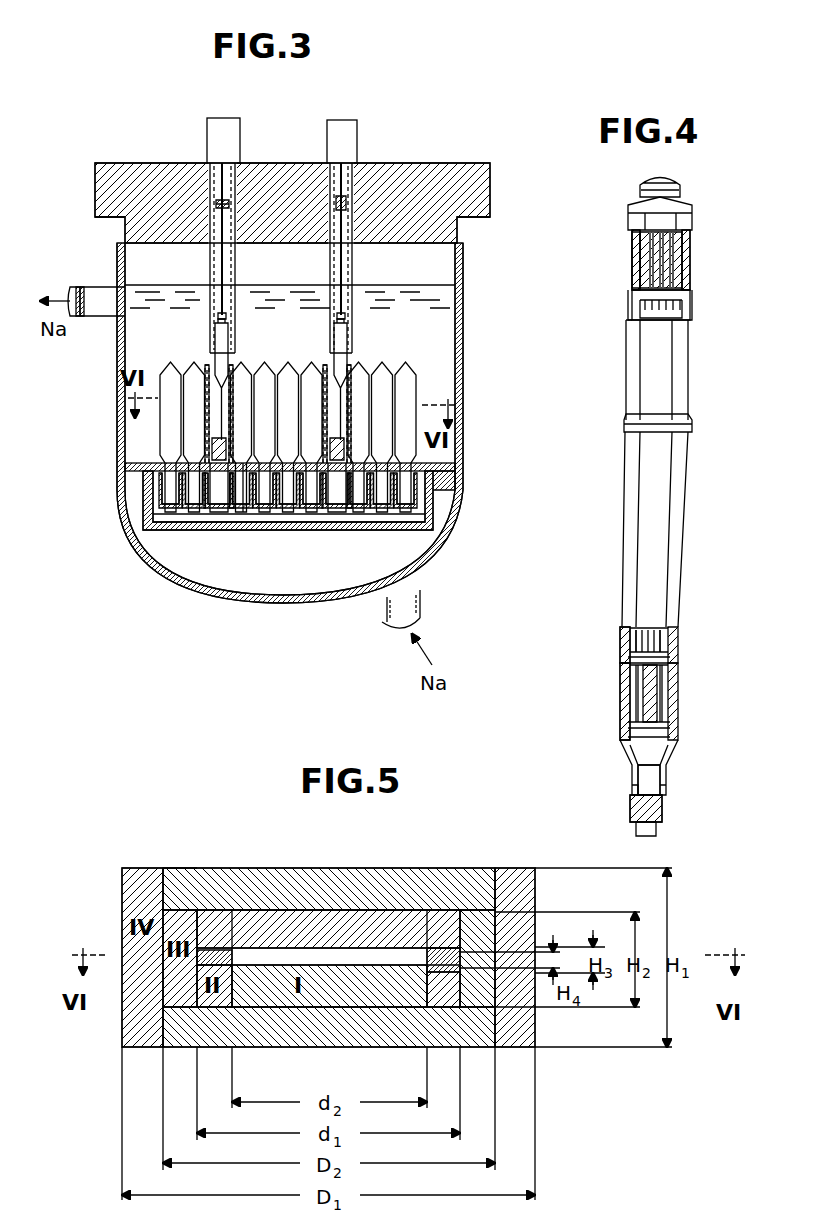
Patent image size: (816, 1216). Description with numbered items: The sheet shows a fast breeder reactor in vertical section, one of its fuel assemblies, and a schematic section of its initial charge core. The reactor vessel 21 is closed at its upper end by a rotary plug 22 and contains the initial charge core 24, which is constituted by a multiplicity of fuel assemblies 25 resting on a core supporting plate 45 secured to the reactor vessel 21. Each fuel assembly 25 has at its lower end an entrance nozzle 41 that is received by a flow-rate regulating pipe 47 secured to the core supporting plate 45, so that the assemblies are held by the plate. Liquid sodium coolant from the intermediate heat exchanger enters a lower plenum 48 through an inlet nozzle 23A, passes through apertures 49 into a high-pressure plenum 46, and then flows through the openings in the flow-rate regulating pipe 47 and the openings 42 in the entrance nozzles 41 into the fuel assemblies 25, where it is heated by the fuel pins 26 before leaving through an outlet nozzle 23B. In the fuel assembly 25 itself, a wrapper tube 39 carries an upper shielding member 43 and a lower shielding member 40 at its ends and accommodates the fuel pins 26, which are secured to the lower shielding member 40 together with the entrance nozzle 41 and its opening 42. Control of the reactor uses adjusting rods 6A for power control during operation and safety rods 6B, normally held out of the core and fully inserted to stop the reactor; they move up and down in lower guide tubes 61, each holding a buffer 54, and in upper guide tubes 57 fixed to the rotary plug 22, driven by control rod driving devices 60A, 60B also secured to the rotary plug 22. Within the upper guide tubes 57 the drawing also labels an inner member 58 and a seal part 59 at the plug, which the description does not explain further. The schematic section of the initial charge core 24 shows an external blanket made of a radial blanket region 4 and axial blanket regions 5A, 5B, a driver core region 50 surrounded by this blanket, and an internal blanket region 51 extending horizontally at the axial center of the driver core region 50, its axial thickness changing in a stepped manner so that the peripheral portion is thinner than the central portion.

In FIG. 3, the reactor vessel 21 is at (463, 330).
In FIG. 3, the rotary plug 22 is at (455, 170).
In FIG. 3, the inlet nozzle 23A is at (422, 600).
In FIG. 3, the outlet nozzle 23B is at (98, 318).
In FIG. 3, the initial charge core 24 is at (161, 340).
In FIG. 5, the initial charge core 24 is at (303, 956).
In FIG. 3, the fuel assembly 25 is at (412, 372).
In FIG. 4, the fuel assembly 25 is at (686, 503).
In FIG. 4, the fuel pins 26 is at (670, 642).
In FIG. 4, the wrapper tube 39 is at (622, 655).
In FIG. 4, the lower shielding member 40 is at (626, 713).
In FIG. 3, the entrance nozzle 41 is at (244, 514).
In FIG. 4, the entrance nozzle 41 is at (666, 772).
In FIG. 4, the opening 42 is at (663, 798).
In FIG. 4, the upper shielding member 43 is at (630, 259).
In FIG. 3, the core supporting plate 45 is at (150, 467).
In FIG. 3, the high-pressure plenum 46 is at (167, 516).
In FIG. 3, the flow-rate regulating pipe 47 is at (155, 512).
In FIG. 3, the lower plenum 48 is at (309, 575).
In FIG. 3, the apertures 49 is at (445, 488).
In FIG. 5, the driver core region 50 is at (178, 978).
In FIG. 5, the internal blanket region 51 is at (378, 966).
In FIG. 3, the buffer 54 is at (212, 447).
In FIG. 3, the upper guide tubes 57 is at (233, 263).
In FIG. 3, the inner rod 58 is at (220, 270).
In FIG. 3, the seal 59 is at (216, 210).
In FIG. 3, the control rod driving device 60A is at (345, 126).
In FIG. 3, the control rod driving device 60B is at (226, 126).
In FIG. 3, the lower guide tubes 61 is at (238, 380).
In FIG. 3, the adjusting rods 6A is at (342, 385).
In FIG. 3, the safety rods 6B is at (218, 368).
In FIG. 5, the radial blanket region 4 is at (122, 1040).
In FIG. 5, the axial blanket region 5A is at (183, 868).
In FIG. 5, the axial blanket region 5B is at (402, 1047).